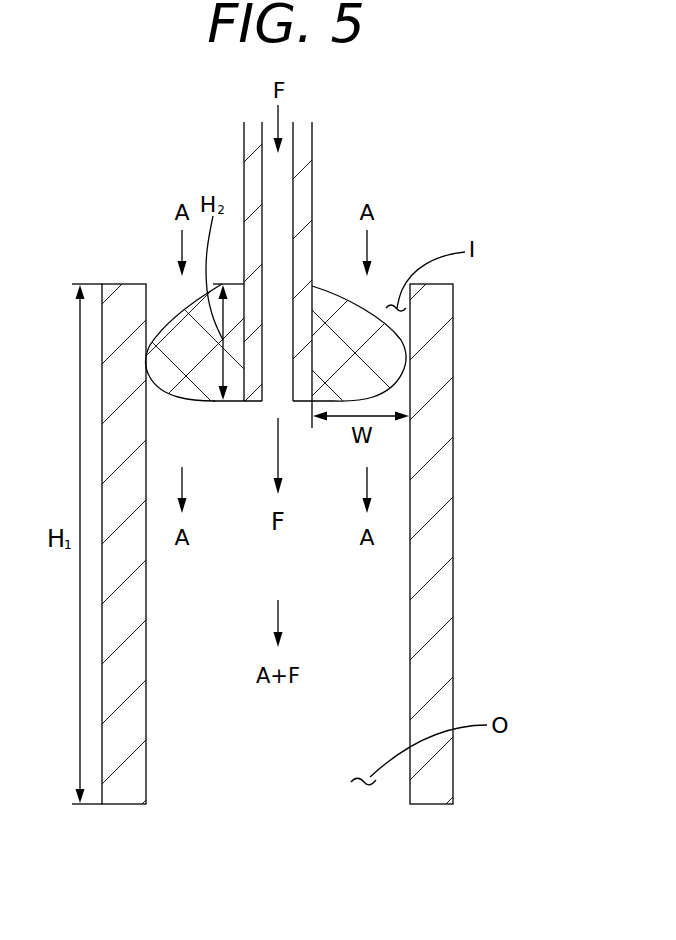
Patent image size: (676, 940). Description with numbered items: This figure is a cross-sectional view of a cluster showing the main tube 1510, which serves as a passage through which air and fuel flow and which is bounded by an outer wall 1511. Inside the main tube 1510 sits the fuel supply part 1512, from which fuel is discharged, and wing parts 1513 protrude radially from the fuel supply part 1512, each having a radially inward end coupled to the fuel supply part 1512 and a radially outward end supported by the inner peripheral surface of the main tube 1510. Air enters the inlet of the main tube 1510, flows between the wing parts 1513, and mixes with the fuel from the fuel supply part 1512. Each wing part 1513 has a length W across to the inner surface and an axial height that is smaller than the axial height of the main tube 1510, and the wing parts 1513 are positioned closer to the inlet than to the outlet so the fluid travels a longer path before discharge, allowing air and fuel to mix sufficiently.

The main tube 1510 is at (100, 141).
The outer wall 1511 is at (441, 484).
The fuel supply part 1512 is at (303, 151).
The wing part 1513 is at (378, 338).